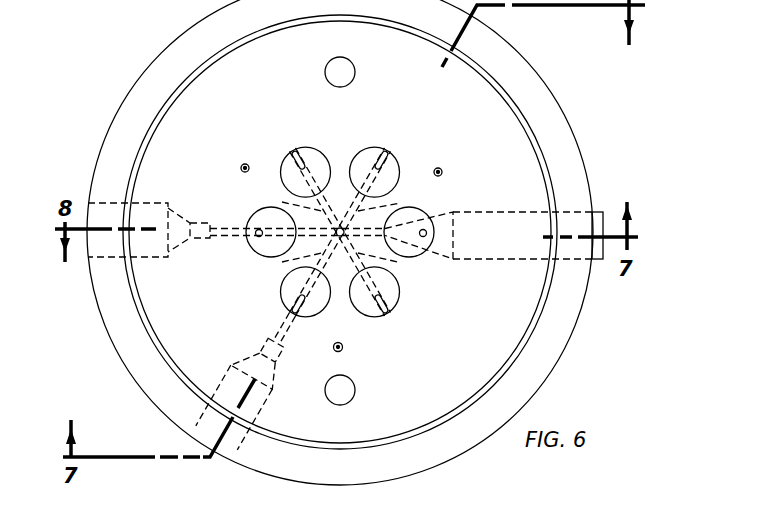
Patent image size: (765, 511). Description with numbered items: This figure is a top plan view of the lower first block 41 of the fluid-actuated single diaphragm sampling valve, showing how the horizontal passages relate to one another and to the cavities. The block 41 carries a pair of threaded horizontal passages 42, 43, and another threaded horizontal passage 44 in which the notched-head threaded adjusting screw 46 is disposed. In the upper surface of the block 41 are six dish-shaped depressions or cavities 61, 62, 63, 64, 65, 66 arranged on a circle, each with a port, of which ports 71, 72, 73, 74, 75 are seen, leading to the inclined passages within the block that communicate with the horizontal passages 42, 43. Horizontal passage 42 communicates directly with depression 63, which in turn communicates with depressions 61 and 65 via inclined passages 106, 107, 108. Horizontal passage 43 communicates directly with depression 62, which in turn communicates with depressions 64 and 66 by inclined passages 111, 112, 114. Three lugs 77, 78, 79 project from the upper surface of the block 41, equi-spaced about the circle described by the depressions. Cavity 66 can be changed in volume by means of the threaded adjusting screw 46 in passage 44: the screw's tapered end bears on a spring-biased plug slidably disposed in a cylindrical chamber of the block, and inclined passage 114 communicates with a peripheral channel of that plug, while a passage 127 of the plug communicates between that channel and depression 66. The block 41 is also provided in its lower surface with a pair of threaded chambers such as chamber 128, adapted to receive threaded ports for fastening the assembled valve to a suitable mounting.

The lower first block 41 is at (97, 165).
The threaded horizontal passage 42 is at (108, 203).
The threaded horizontal passage 43 is at (266, 395).
The threaded horizontal passage 44 is at (478, 262).
The threaded adjusting screw 46 is at (598, 212).
The dish-shaped depression 61 is at (396, 283).
The dish-shaped depression 62 is at (282, 291).
The dish-shaped depression 63 is at (250, 222).
The dish-shaped depression 64 is at (291, 161).
The dish-shaped depression 65 is at (387, 153).
The dish-shaped depression 66 is at (413, 209).
The port 71 is at (398, 305).
The port 72 is at (298, 314).
The port 73 is at (256, 247).
The port 74 is at (297, 156).
The port 75 is at (375, 153).
The lug 77 is at (341, 344).
The lug 78 is at (243, 164).
The lug 79 is at (441, 169).
The inclined passage 106 is at (340, 232).
The inclined passage 107 is at (398, 263).
The inclined passage 108 is at (360, 203).
The inclined passage 111 is at (290, 262).
The inclined passage 112 is at (282, 202).
The inclined passage 114 is at (341, 232).
The passage of plug 127 is at (433, 233).
The threaded chamber 128 is at (326, 71).